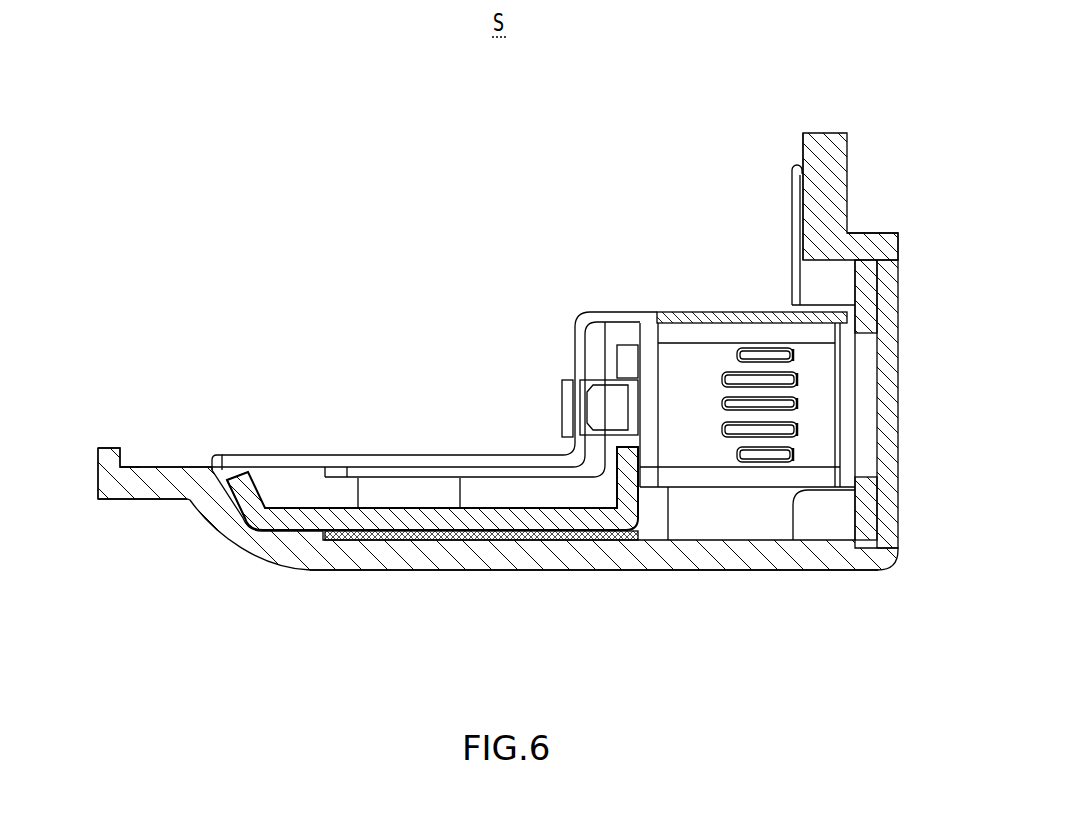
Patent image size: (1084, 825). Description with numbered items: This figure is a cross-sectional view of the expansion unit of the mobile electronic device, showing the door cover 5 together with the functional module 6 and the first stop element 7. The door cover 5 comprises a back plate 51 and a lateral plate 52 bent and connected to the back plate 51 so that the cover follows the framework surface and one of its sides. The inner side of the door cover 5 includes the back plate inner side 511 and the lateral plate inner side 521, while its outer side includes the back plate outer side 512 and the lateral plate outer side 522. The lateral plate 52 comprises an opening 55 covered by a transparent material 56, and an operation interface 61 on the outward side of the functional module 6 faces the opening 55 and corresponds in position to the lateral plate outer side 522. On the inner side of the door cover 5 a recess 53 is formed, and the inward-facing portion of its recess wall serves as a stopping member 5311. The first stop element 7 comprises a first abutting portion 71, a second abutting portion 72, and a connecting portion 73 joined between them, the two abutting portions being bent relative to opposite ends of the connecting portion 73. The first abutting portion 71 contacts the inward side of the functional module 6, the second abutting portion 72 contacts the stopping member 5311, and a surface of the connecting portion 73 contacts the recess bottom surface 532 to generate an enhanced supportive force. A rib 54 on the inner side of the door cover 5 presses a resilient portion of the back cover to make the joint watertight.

The door cover 5 is at (822, 574).
The back plate 51 is at (98, 480).
The back plate inner side 511 is at (152, 453).
The back plate outer side 512 is at (635, 572).
The lateral plate 52 is at (806, 132).
The lateral plate inner side 521 is at (800, 152).
The lateral plate outer side 522 is at (898, 252).
The recess 53 is at (290, 463).
The stopping member 5311 is at (243, 456).
The recess bottom surface 532 is at (543, 500).
The rib 54 is at (215, 456).
The opening 55 is at (852, 364).
The transparent material 56 is at (900, 357).
The functional module 6 is at (704, 468).
The operation interface 61 is at (842, 402).
The first stop element 7 is at (415, 492).
The first abutting portion 71 is at (610, 418).
The second abutting portion 72 is at (250, 474).
The connecting portion 73 is at (452, 525).